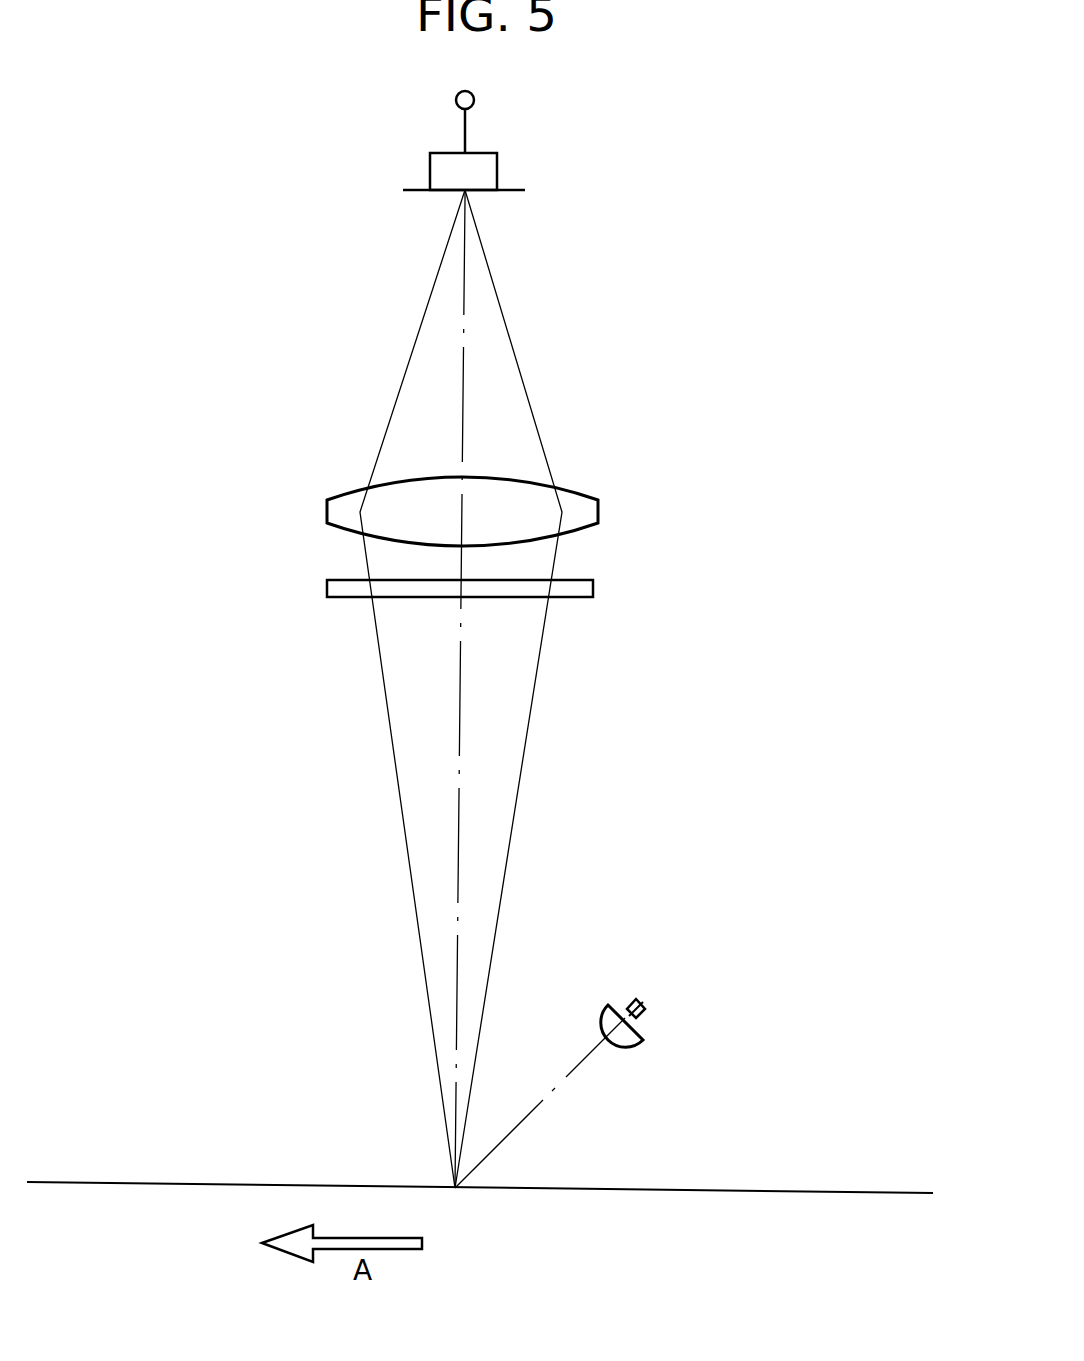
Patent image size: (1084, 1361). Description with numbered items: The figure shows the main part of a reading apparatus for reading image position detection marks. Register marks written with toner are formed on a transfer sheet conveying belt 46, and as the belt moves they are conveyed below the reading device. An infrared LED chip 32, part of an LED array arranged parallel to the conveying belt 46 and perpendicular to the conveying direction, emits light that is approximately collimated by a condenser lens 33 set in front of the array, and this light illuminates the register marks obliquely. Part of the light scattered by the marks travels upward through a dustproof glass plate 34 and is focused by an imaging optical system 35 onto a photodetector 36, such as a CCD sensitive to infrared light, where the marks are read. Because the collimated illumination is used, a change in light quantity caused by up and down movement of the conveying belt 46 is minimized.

The infrared LED chip 32 is at (647, 1010).
The condenser lens 33 is at (607, 1005).
The dustproof glass plate 34 is at (593, 588).
The imaging optical system 35 is at (587, 497).
The photodetector 36 is at (497, 170).
The transfer sheet conveying belt 46 is at (810, 1190).